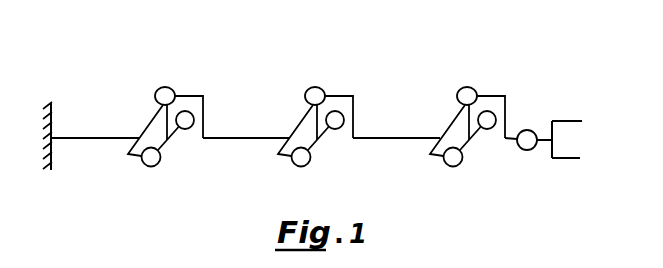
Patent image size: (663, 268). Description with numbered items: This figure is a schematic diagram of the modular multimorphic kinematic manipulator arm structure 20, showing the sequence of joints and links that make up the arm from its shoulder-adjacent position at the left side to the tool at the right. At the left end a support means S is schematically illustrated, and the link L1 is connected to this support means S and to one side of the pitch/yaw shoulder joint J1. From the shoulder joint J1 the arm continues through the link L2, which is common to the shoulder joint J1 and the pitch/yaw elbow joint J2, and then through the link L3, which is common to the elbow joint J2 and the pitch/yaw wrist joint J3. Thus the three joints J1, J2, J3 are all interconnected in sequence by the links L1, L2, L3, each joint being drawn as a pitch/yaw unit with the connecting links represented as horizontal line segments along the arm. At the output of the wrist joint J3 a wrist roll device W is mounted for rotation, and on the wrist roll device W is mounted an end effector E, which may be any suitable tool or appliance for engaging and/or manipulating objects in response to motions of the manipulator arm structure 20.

The modular multimorphic kinematic manipulator arm structure 20 is at (168, 236).
The support means S is at (53, 112).
The link L1 is at (112, 139).
The link L2 is at (268, 143).
The link L3 is at (412, 142).
The pitch/yaw shoulder joint J1 is at (187, 80).
The pitch/yaw elbow joint J2 is at (342, 82).
The pitch/yaw wrist joint J3 is at (492, 82).
The wrist roll device W is at (528, 150).
The end effector E is at (570, 160).